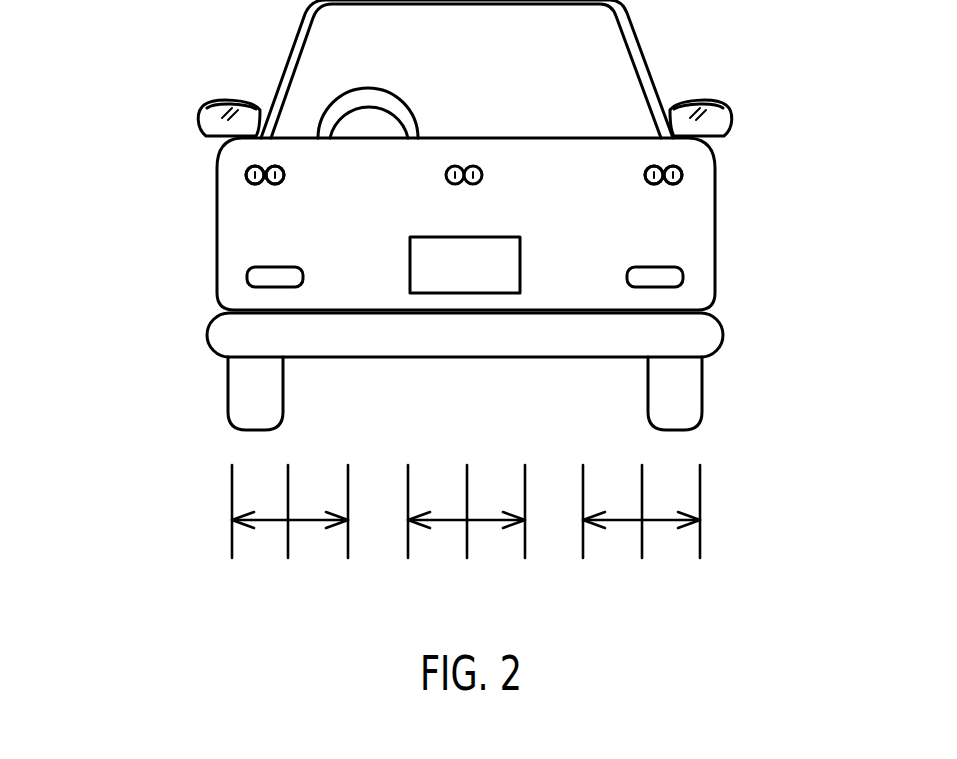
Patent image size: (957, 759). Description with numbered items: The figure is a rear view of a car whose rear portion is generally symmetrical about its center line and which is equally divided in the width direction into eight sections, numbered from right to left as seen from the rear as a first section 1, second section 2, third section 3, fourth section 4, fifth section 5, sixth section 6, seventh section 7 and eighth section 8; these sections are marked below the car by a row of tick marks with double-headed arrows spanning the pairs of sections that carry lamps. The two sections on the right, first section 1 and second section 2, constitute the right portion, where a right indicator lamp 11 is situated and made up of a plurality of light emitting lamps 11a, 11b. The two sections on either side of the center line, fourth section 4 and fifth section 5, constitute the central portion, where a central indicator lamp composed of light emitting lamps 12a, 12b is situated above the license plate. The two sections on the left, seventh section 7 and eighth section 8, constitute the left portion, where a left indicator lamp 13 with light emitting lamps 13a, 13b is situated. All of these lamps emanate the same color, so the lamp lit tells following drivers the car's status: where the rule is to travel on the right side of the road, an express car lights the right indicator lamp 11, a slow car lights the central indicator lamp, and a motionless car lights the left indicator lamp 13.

The right indicator lamp 11 is at (825, 135).
The light emitting lamp 11a is at (653, 168).
The light emitting lamp 11b is at (681, 174).
The light emitting lamp 12a is at (455, 184).
The light emitting lamp 12b is at (473, 184).
The left indicator lamp 13 is at (107, 135).
The light emitting lamp 13a is at (247, 179).
The light emitting lamp 13b is at (271, 185).
The first section 1 is at (675, 582).
The second section 2 is at (615, 582).
The third section 3 is at (555, 582).
The fourth section 4 is at (497, 582).
The fifth section 5 is at (442, 582).
The sixth section 6 is at (382, 582).
The seventh section 7 is at (320, 582).
The eighth section 8 is at (262, 582).